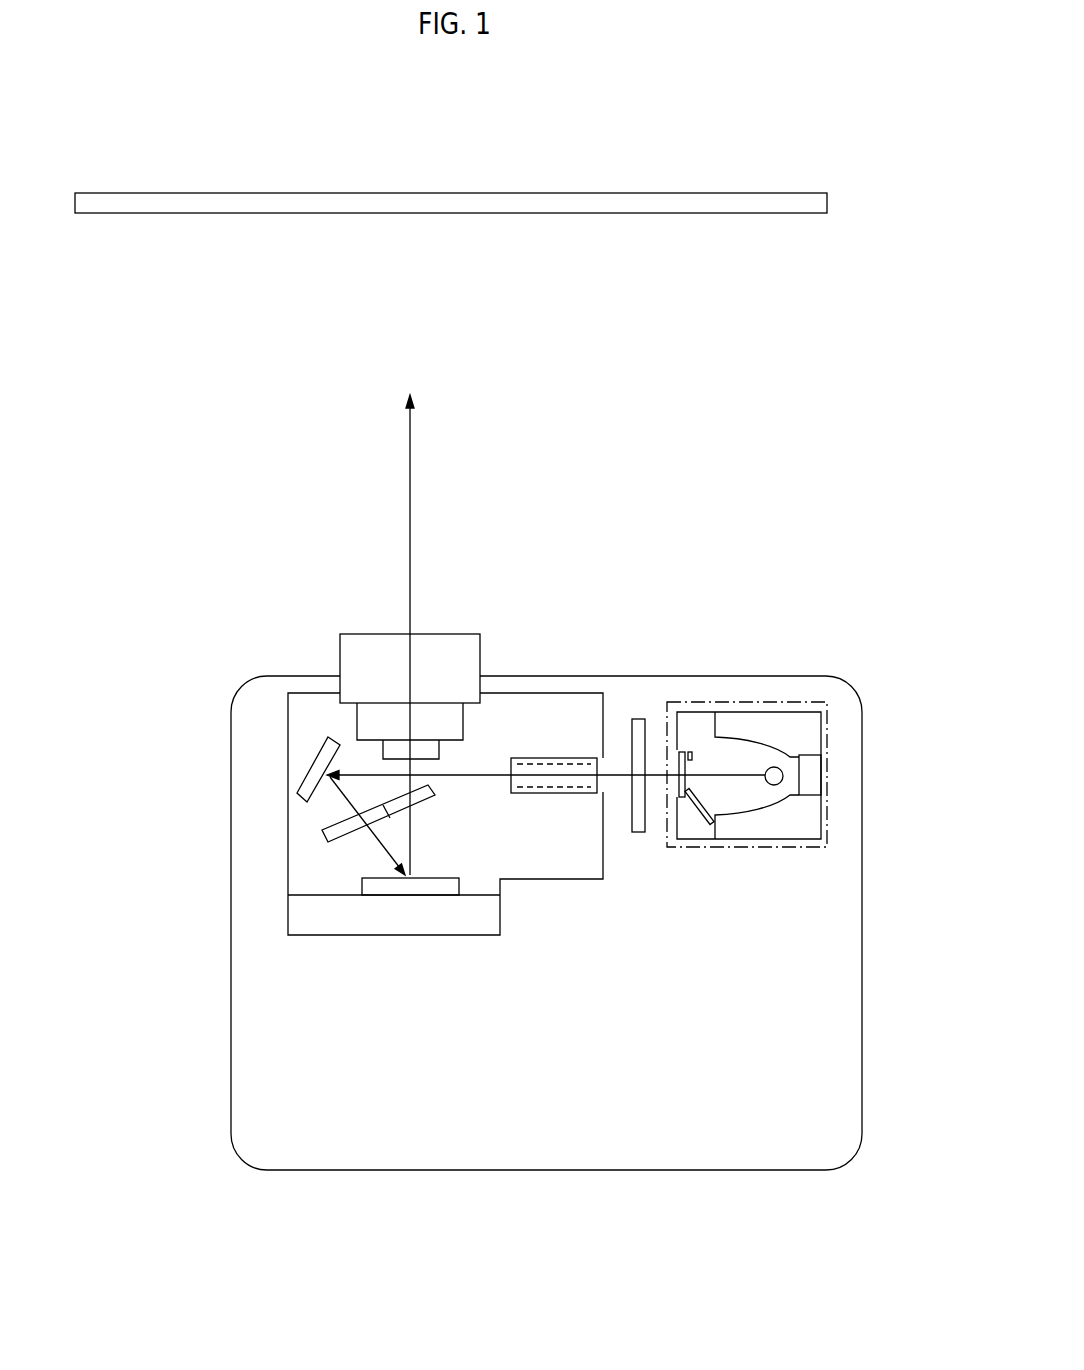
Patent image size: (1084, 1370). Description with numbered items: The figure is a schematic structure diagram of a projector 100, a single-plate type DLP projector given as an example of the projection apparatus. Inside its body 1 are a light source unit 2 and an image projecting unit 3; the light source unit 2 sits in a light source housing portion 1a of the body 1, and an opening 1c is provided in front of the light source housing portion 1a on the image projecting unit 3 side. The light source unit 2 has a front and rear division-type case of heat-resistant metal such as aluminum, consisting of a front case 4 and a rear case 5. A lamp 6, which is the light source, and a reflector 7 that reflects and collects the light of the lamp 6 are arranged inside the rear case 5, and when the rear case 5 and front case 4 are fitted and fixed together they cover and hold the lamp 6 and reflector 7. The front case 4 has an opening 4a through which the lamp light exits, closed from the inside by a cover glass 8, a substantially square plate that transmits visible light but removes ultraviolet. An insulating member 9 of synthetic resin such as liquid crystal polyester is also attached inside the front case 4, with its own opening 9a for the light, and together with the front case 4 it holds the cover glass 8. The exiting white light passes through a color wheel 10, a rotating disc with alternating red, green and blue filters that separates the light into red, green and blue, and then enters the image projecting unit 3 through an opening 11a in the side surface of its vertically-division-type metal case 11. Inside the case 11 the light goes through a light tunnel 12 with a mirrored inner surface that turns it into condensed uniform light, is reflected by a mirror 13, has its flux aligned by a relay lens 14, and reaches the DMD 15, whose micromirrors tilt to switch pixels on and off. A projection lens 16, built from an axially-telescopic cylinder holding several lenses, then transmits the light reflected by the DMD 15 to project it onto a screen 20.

The body 1 is at (862, 952).
The light source housing portion 1a is at (828, 813).
The opening 1c is at (667, 767).
The light source unit 2 is at (748, 901).
The image projecting unit 3 is at (612, 924).
The front case 4 is at (697, 839).
The opening 4a is at (675, 785).
The rear case 5 is at (795, 839).
The lamp 6 is at (772, 785).
The reflector 7 is at (745, 839).
The cover glass 8 is at (682, 752).
The insulating member 9 is at (699, 806).
The opening 9a is at (694, 764).
The color wheel 10 is at (639, 832).
The case 11 is at (553, 880).
The opening 11a is at (605, 768).
The light tunnel 12 is at (553, 793).
The mirror 13 is at (308, 775).
The relay lens 14 is at (338, 840).
The DMD 15 is at (447, 878).
The projection lens 16 is at (482, 657).
The screen 20 is at (752, 213).
The projector 100 is at (770, 597).